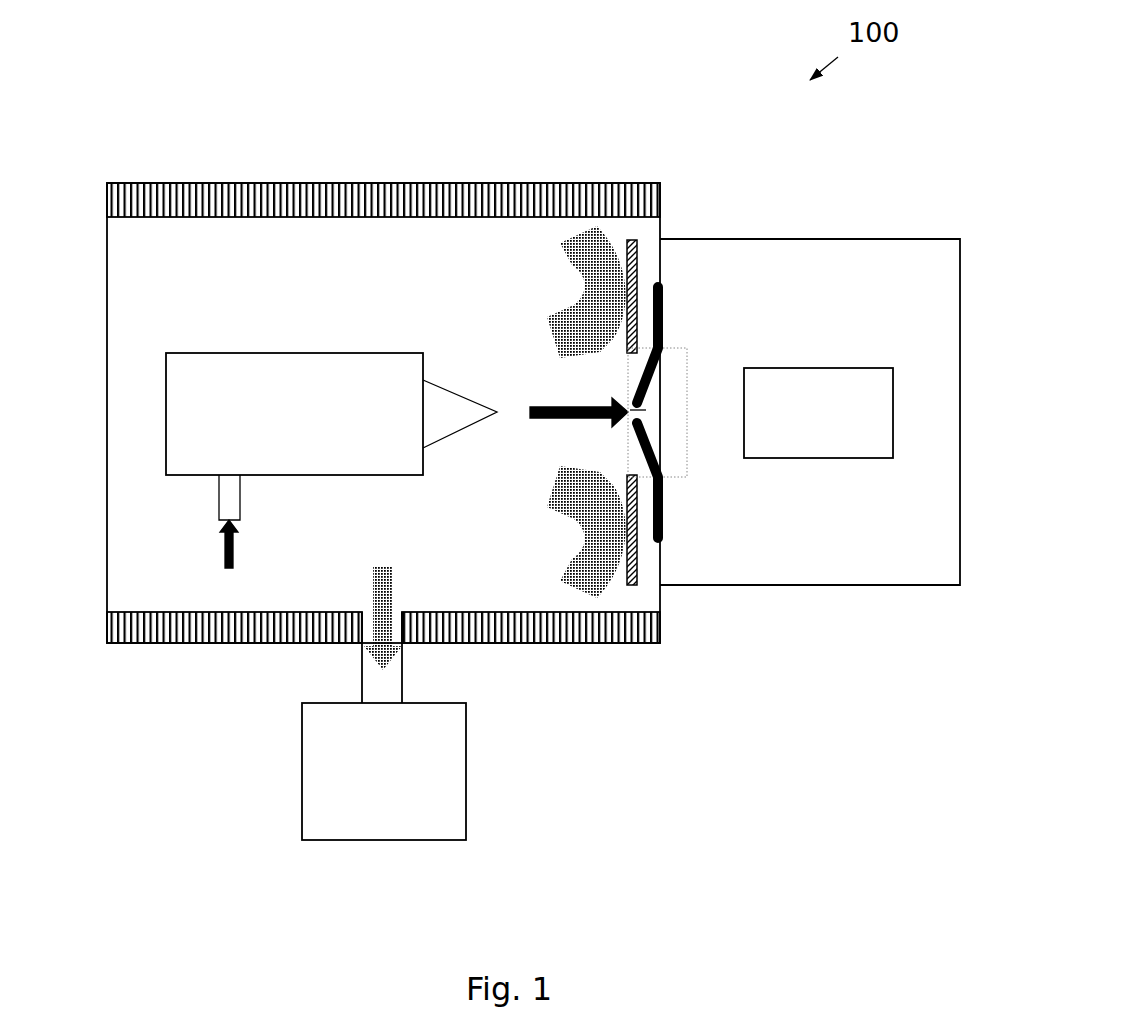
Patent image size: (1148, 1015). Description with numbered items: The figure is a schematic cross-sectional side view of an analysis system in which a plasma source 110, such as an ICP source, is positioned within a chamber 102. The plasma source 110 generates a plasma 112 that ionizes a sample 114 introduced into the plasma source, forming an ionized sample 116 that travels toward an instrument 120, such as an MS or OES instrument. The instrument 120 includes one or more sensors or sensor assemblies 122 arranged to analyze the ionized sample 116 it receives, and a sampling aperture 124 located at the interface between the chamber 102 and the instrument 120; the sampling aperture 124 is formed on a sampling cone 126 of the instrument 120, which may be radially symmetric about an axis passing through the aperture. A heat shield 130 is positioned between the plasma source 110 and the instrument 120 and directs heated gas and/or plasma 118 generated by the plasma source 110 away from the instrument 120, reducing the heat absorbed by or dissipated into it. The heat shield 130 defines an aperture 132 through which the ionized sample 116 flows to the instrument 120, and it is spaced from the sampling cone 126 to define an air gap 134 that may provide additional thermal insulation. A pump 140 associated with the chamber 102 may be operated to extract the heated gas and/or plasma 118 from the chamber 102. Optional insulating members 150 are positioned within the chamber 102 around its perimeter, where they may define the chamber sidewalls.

The chamber 102 is at (152, 322).
The plasma source 110 is at (294, 414).
The plasma 112 is at (463, 428).
The sample 114 is at (222, 550).
The ionized sample 116 is at (567, 418).
The heated gas and/or plasma 118 is at (590, 308).
The instrument 120 is at (810, 412).
The sensors or sensor assemblies 122 is at (818, 413).
The sampling aperture 124 is at (644, 407).
The sampling cone 126 is at (653, 455).
The heat shield 130 is at (637, 268).
The aperture 132 is at (614, 381).
The air gap 134 is at (647, 320).
The pump 140 is at (384, 726).
The insulating members 150 is at (352, 187).